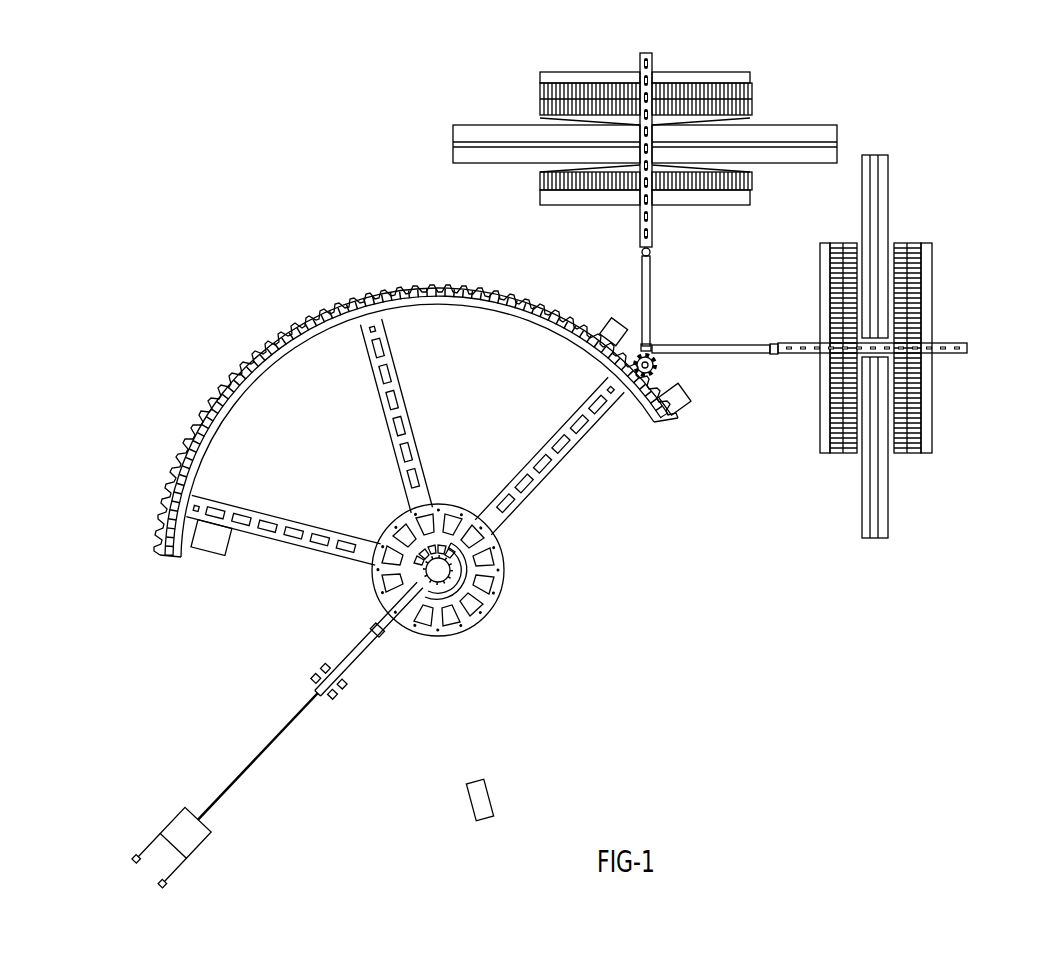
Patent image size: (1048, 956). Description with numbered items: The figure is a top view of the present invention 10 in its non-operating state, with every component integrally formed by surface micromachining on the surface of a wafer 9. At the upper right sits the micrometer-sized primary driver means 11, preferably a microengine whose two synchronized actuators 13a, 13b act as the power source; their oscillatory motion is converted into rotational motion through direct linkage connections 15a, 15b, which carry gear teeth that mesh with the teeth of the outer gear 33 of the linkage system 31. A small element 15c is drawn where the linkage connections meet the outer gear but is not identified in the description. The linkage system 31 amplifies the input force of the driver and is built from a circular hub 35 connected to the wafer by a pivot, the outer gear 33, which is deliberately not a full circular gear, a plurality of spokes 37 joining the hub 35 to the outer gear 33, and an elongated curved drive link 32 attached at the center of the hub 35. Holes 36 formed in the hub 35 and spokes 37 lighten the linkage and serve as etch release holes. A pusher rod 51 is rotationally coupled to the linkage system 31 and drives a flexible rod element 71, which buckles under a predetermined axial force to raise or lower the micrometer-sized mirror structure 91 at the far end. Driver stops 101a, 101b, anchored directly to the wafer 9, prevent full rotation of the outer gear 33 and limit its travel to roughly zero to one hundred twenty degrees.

The present invention 10 is at (193, 253).
The wafer 9 is at (760, 638).
The primary driver means 11 is at (605, 250).
The synchronized actuator 13a is at (932, 302).
The synchronized actuator 13b is at (705, 74).
The direct linkage connection 15a is at (716, 345).
The direct linkage connection 15b is at (650, 281).
The pinion gear 15c is at (657, 367).
The linkage system 31 is at (200, 389).
The elongated curved drive link 32 is at (468, 588).
The outer gear 33 is at (364, 293).
The circular hub 35 is at (478, 631).
The holes 36 is at (418, 480).
The spokes 37 is at (405, 401).
The pusher rod 51 is at (365, 660).
The flexible rod element 71 is at (255, 763).
The mirror structure 91 is at (195, 850).
The driver stop 101a is at (490, 797).
The driver stop 101b is at (215, 548).